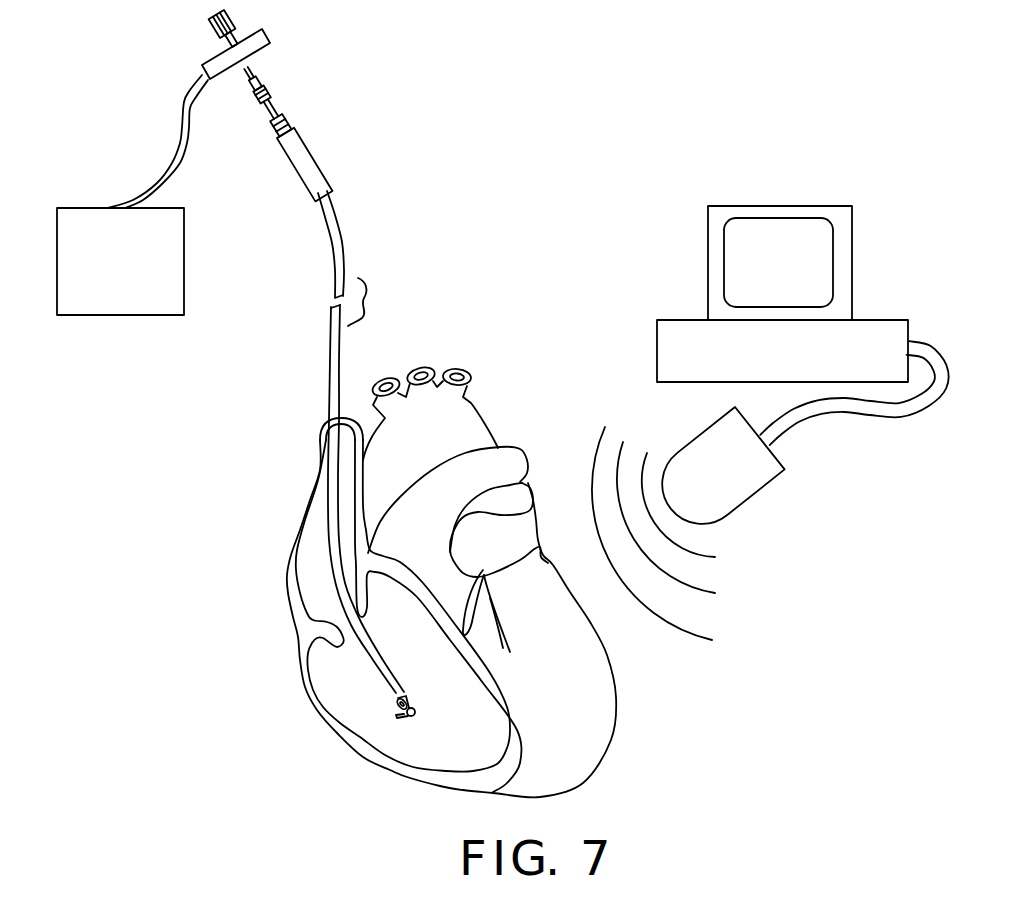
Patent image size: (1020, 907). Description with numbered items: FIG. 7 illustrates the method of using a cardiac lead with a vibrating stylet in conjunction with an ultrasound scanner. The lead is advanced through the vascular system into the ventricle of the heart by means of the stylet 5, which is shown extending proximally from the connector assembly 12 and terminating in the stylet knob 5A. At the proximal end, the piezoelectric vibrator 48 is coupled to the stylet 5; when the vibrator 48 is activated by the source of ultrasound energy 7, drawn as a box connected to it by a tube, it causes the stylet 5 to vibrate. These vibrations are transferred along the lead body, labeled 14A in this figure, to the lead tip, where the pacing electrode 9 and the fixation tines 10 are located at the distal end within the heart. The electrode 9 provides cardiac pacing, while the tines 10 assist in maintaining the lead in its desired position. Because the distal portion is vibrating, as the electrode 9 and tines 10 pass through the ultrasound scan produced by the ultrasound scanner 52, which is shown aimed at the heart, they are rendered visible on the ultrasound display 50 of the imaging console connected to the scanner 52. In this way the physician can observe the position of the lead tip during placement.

The stylet knob 5A is at (238, 20).
The piezoelectric vibrator 48 is at (265, 42).
The stylet 5 is at (240, 68).
The connector assembly 12 is at (307, 152).
The source of ultrasound energy 7 is at (108, 317).
The catheter body 14A is at (343, 355).
The tines 10 is at (410, 700).
The pacing electrode 9 is at (407, 717).
The ultrasound display 50 is at (736, 206).
The ultrasound scanner 52 is at (757, 497).